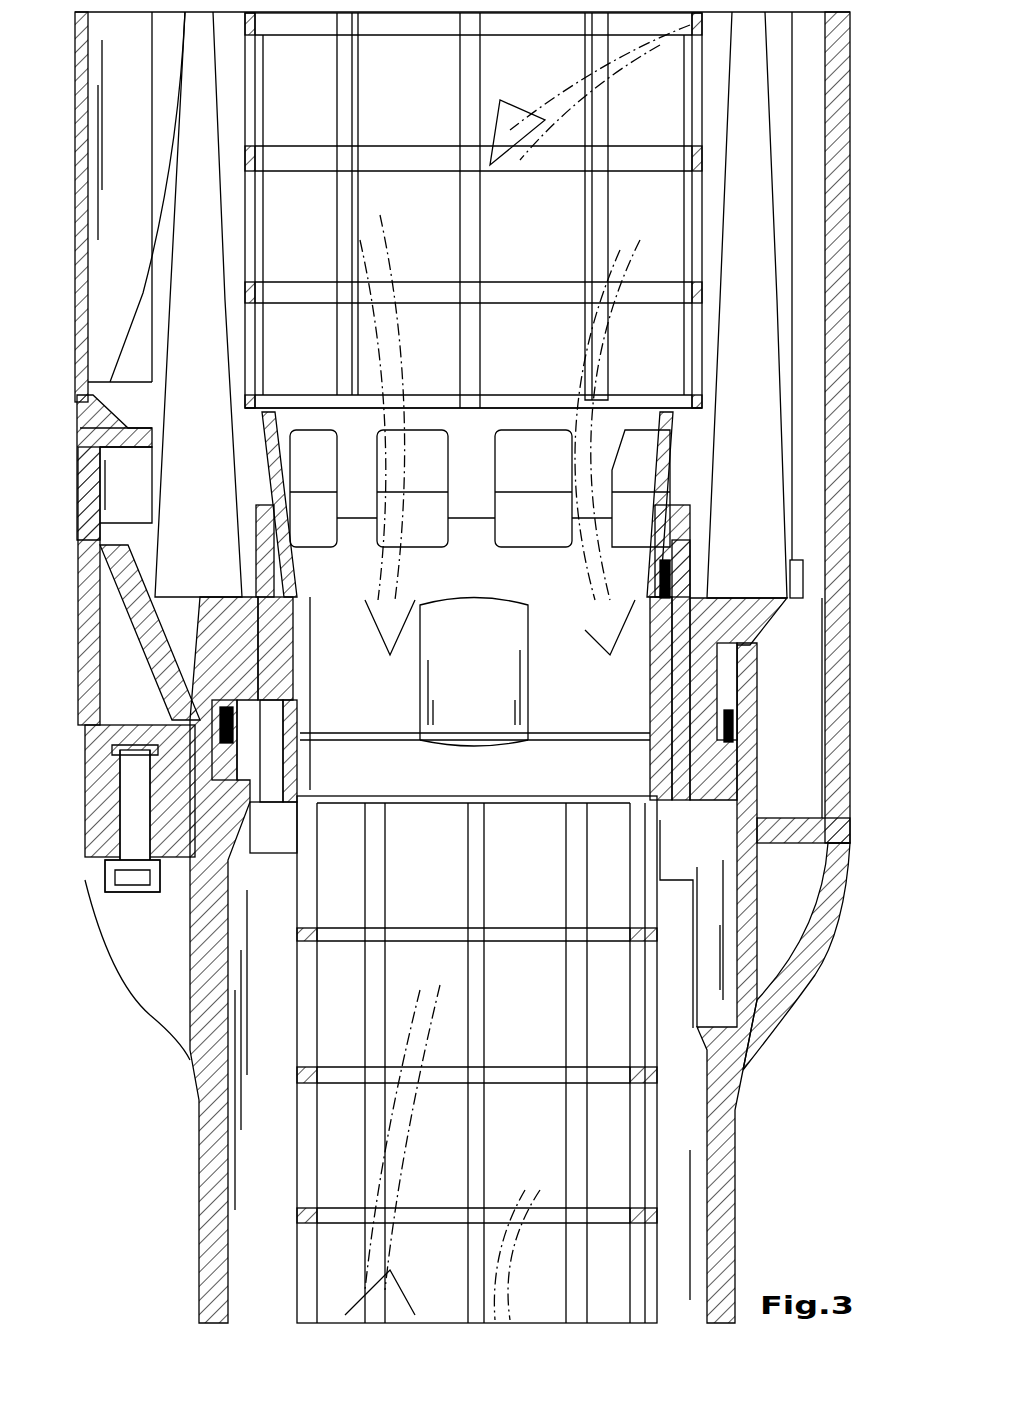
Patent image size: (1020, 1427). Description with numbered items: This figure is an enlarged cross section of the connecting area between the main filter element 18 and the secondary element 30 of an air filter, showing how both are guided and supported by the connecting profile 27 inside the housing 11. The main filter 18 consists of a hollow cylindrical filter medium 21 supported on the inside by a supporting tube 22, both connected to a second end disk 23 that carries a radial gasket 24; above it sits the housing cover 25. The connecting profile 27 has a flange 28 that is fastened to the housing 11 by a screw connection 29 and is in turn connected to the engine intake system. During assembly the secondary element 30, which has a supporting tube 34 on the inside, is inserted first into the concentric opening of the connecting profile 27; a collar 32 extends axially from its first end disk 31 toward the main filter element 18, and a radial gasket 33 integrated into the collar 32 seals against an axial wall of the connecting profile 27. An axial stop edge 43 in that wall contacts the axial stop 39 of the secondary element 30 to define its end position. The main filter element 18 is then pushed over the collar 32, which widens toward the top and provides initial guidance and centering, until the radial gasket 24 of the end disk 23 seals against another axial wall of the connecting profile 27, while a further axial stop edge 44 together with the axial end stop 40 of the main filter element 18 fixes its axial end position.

The housing 11 is at (835, 165).
The main filter 18 is at (668, 118).
The hollow cylindrical filter medium 21 is at (765, 393).
The supporting tube 22 is at (700, 292).
The second end disk 23 is at (750, 630).
The radial gasket 24 is at (748, 725).
The housing cover 25 is at (82, 254).
The connecting profile 27 is at (715, 800).
The flange 28 is at (815, 955).
The screw connection 29 is at (125, 885).
The secondary element 30 is at (612, 1180).
The first end disk 31 is at (592, 697).
The collar 32 is at (643, 420).
The radial gasket 33 is at (660, 578).
The supporting tube 34 is at (722, 1088).
The axial stop 39 is at (296, 585).
The axial end stop 40 is at (237, 750).
The axial stop edge 43 is at (295, 630).
The axial stop edge 44 is at (273, 827).